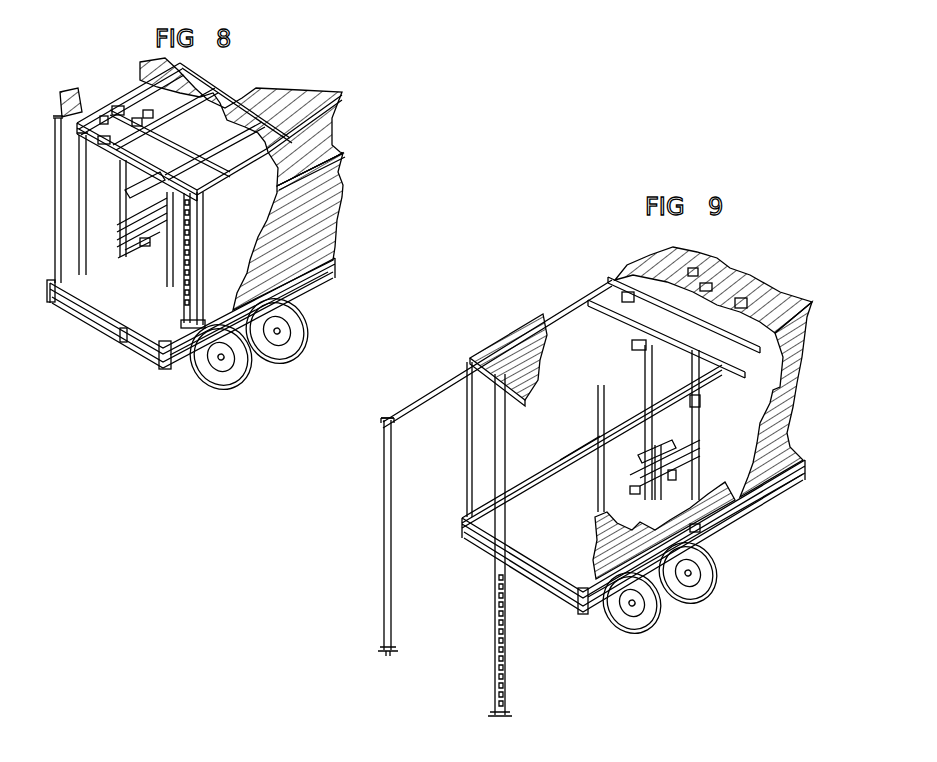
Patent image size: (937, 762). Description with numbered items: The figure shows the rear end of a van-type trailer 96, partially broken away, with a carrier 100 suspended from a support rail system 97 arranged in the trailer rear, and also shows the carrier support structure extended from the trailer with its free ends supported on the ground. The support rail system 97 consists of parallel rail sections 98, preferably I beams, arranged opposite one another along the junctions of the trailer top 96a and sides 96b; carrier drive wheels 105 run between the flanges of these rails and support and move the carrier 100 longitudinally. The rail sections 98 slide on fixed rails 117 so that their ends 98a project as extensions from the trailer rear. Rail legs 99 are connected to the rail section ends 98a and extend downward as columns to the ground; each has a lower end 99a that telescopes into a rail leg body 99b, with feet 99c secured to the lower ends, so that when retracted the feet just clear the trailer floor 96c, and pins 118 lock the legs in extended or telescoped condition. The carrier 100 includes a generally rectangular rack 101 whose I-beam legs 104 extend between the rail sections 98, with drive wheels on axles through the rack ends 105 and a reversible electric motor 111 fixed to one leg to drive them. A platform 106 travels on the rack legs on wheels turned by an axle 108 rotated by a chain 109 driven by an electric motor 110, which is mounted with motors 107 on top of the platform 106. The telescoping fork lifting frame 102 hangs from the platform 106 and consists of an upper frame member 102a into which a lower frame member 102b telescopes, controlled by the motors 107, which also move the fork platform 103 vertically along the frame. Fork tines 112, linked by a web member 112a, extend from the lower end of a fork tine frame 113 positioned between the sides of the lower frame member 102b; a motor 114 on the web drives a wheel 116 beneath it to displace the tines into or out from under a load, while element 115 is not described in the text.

In FIG. 8, the van-type trailer 96 is at (372, 78).
In FIG. 9, the van-type trailer 96 is at (836, 298).
In FIG. 8, the trailer top 96a is at (279, 113).
In FIG. 9, the trailer top 96a is at (808, 300).
In FIG. 8, the trailer sides 96b is at (70, 204).
In FIG. 9, the trailer sides 96b is at (800, 378).
In FIG. 9, the trailer floor 96c is at (571, 538).
In FIG. 8, the support rail system 97 is at (78, 76).
In FIG. 8, the rail sections 98 is at (133, 67).
In FIG. 9, the rail sections 98 is at (547, 322).
In FIG. 8, the rail section ends 98a is at (85, 100).
In FIG. 9, the rail section ends 98a is at (503, 490).
In FIG. 8, the rail legs 99 is at (74, 224).
In FIG. 9, the rail legs 99 is at (482, 607).
In FIG. 9, the rail leg lower ends 99a is at (497, 660).
In FIG. 8, the rail leg body 99b is at (79, 238).
In FIG. 9, the rail leg body 99b is at (497, 573).
In FIG. 8, the feet 99c is at (80, 283).
In FIG. 9, the feet 99c is at (492, 717).
In FIG. 8, the carrier 100 is at (150, 266).
In FIG. 9, the carrier 100 is at (648, 610).
In FIG. 8, the rack 101 is at (184, 78).
In FIG. 8, the telescoping fork lifting frame 102 is at (110, 195).
In FIG. 9, the telescoping fork lifting frame 102 is at (714, 428).
In FIG. 9, the upper frame member 102a is at (784, 384).
In FIG. 9, the lower frame member 102b is at (760, 492).
In FIG. 8, the fork platform 103 is at (136, 258).
In FIG. 9, the fork platform 103 is at (650, 498).
In FIG. 8, the rack legs 104 is at (210, 150).
In FIG. 9, the rack legs 104 is at (645, 290).
In FIG. 8, the rack ends 105 is at (112, 108).
In FIG. 9, the rack ends 105 is at (627, 292).
In FIG. 8, the platform 106 is at (234, 94).
In FIG. 8, the motors 107 is at (153, 116).
In FIG. 9, the motors 107 is at (742, 298).
In FIG. 8, the axle 108 is at (134, 120).
In FIG. 9, the axle 108 is at (625, 300).
In FIG. 8, the chain 109 is at (102, 120).
In FIG. 9, the chain 109 is at (695, 268).
In FIG. 8, the electric motor 110 is at (100, 141).
In FIG. 9, the electric motor 110 is at (712, 284).
In FIG. 9, the reversible electric motor 111 is at (636, 350).
In FIG. 8, the fork tines 112 is at (208, 205).
In FIG. 9, the fork tines 112 is at (712, 428).
In FIG. 9, the web member 112a is at (672, 478).
In FIG. 8, the fork tine frame 113 is at (147, 253).
In FIG. 9, the fork tine frame 113 is at (570, 454).
In FIG. 8, the motor 114 is at (150, 242).
In FIG. 9, the motor 114 is at (630, 490).
In FIG. 8, the bed side rail 115 is at (190, 266).
In FIG. 9, the bed side rail 115 is at (692, 528).
In FIG. 8, the wheel 116 is at (127, 240).
In FIG. 9, the wheel 116 is at (630, 475).
In FIG. 9, the fixed rails 117 is at (545, 332).
In FIG. 8, the pins 118 is at (190, 300).
In FIG. 9, the pins 118 is at (510, 630).